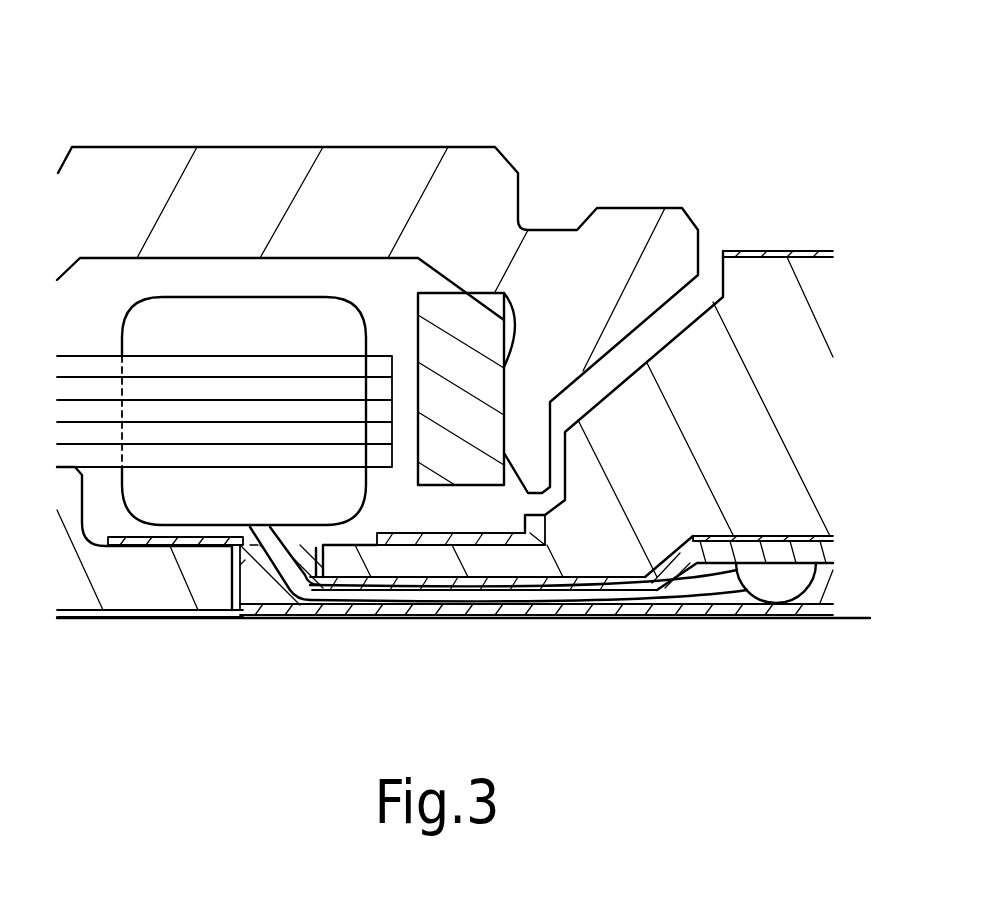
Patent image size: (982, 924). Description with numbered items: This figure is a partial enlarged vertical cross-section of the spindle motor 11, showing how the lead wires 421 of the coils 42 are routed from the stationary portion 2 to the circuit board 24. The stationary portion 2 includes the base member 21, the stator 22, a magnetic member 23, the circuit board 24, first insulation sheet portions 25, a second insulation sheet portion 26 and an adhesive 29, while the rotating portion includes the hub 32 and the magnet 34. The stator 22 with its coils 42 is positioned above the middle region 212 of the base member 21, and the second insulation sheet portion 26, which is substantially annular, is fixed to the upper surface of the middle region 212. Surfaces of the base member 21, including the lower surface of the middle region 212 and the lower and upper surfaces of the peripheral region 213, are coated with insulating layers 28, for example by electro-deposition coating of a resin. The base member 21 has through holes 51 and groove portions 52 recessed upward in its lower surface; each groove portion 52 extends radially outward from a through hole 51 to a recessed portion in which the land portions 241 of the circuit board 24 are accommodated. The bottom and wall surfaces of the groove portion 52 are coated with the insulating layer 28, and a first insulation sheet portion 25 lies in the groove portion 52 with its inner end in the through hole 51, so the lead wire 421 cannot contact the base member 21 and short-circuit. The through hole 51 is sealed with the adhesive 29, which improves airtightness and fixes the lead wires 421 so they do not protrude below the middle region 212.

The spindle motor 11 is at (661, 108).
The stationary portion 2 is at (588, 660).
The base member 21 is at (593, 396).
The middle region 212 is at (147, 580).
The peripheral region 213 is at (790, 343).
The stator 22 is at (351, 292).
The magnetic member 23 is at (465, 537).
The circuit board 24 is at (770, 553).
The land portions 241 is at (752, 617).
The first insulation sheet portions 25 is at (357, 587).
The second insulation sheet portion 26 is at (197, 538).
The insulating layers 28 is at (770, 253).
The adhesive 29 is at (253, 600).
The hub 32 is at (120, 203).
The magnet 34 is at (458, 363).
The coils 42 is at (270, 333).
The lead wires 421 is at (500, 597).
The through holes 51 is at (265, 603).
The groove portions 52 is at (406, 608).